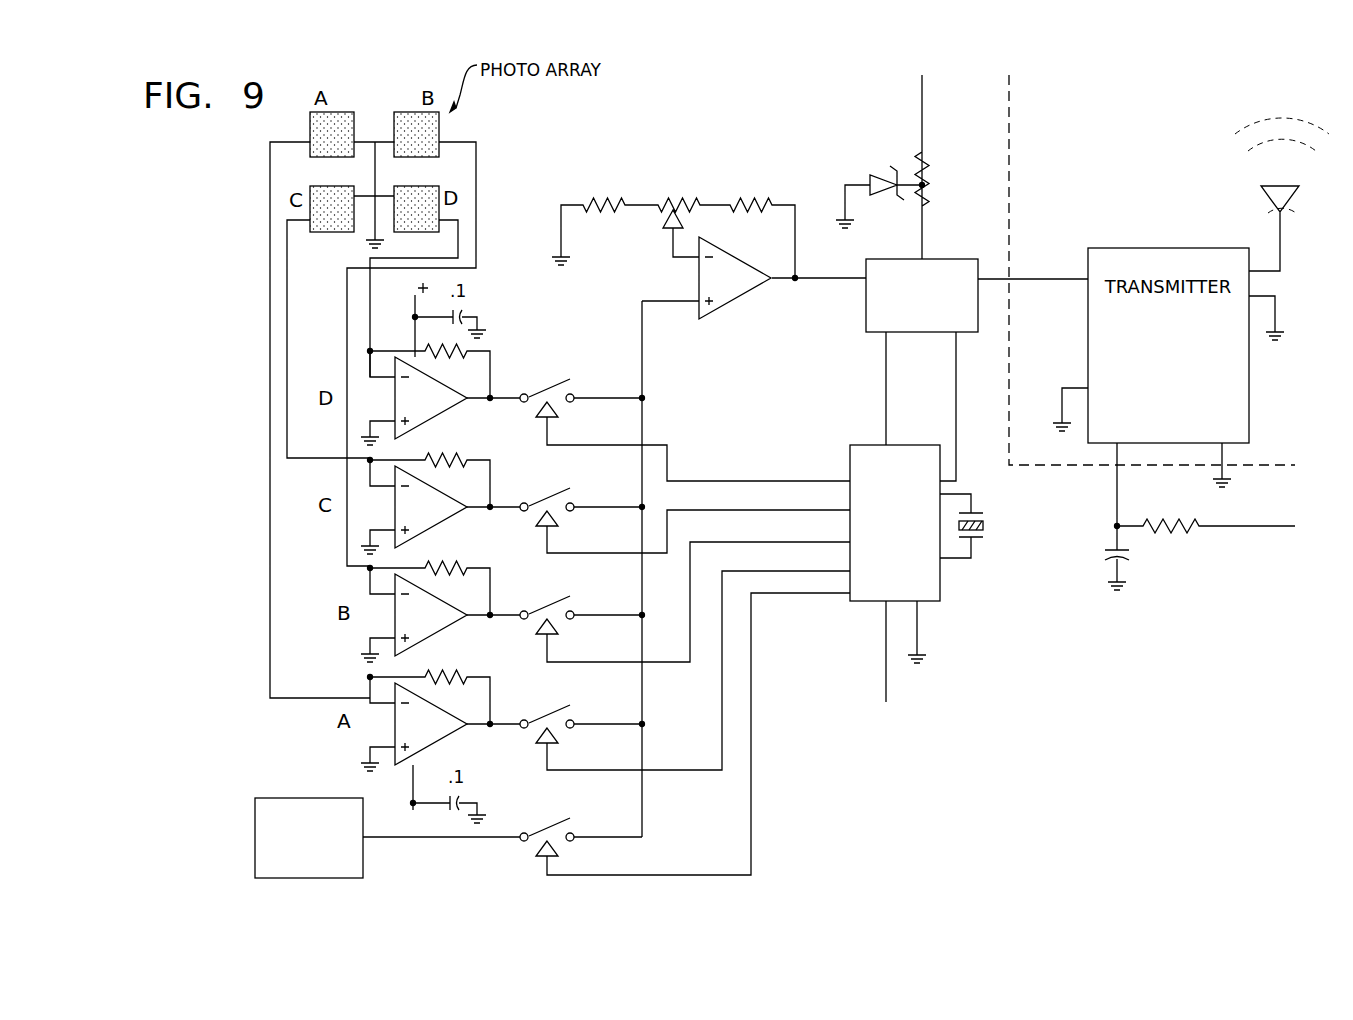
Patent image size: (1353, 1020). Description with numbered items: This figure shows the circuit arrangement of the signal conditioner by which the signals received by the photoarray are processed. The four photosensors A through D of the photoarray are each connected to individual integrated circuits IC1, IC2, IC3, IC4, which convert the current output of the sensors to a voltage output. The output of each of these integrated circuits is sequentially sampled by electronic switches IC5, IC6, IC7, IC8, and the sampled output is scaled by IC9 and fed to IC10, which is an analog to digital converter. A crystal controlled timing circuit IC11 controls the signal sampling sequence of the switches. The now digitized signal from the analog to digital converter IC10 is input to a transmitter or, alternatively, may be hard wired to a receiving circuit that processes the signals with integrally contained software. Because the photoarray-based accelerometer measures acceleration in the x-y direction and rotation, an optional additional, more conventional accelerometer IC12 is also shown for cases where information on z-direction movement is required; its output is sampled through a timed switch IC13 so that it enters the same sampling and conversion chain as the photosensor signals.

The integrated circuit IC1 is at (440, 394).
The integrated circuit IC2 is at (440, 503).
The integrated circuit IC3 is at (440, 611).
The integrated circuit IC4 is at (440, 720).
The electronic switch IC5 is at (685, 670).
The electronic switch IC6 is at (685, 602).
The electronic switch IC7 is at (685, 512).
The electronic switch IC8 is at (685, 422).
The scaling circuit IC9 is at (709, 259).
The analog to digital converter IC10 is at (962, 203).
The crystal controlled timing circuit IC11 is at (909, 517).
The conventional accelerometer IC12 is at (387, 839).
The timed switch IC13 is at (685, 734).